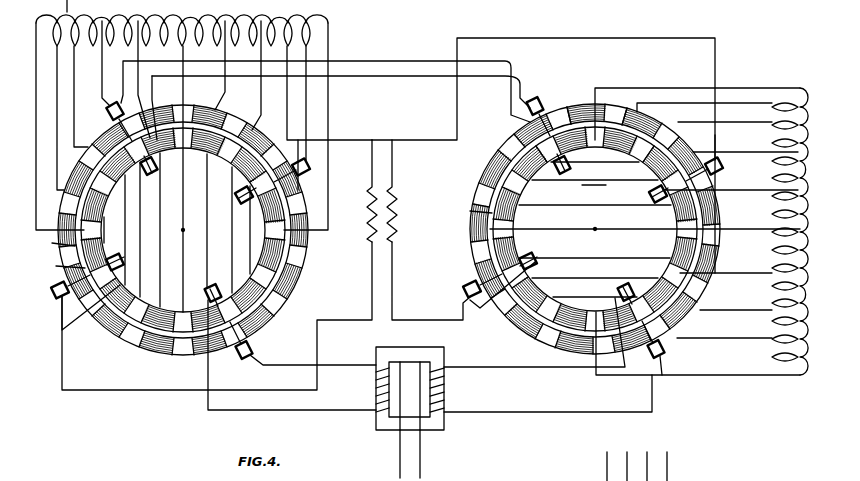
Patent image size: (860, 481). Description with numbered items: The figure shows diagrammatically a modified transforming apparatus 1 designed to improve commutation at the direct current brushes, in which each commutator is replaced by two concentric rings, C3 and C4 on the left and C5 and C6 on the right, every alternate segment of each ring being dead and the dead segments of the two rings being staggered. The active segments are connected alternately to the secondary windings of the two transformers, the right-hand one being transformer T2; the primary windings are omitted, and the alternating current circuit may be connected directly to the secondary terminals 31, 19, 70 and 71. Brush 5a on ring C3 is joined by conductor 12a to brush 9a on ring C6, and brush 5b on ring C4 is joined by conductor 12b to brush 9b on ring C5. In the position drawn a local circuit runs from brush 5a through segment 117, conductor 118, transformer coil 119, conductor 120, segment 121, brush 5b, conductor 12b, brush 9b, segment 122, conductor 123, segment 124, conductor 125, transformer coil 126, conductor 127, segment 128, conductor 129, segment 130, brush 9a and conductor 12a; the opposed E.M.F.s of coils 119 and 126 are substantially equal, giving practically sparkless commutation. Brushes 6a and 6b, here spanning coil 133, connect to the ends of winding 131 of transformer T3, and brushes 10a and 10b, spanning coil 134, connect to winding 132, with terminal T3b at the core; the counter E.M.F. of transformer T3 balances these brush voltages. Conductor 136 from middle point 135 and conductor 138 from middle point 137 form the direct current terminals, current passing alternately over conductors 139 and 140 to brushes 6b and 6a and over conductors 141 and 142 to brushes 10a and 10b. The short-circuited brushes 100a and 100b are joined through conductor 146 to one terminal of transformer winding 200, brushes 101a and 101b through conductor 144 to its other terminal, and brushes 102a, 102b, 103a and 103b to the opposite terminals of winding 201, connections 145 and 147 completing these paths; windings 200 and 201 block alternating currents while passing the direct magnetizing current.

The motor 1 is at (64, 7).
The secondary winding terminal 31 is at (52, 115).
The transformer coil 119 is at (118, 22).
The coil of the secondary winding 133 is at (240, 22).
The secondary winding terminal 19 is at (329, 22).
The conductor 12a is at (366, 62).
The conductor 12b is at (368, 78).
The conductor 118 is at (102, 75).
The conductor 120 is at (139, 73).
The commutator segment 121 is at (160, 150).
The commutator segment 117 is at (103, 133).
The brush 5a is at (107, 116).
The brush 5b is at (155, 172).
The short circuited brush 101a is at (309, 168).
The short circuited brush 101b is at (238, 201).
The short circuited brush 100a is at (56, 296).
The short circuited brush 100b is at (122, 259).
The brush 6a is at (216, 286).
The brush 6b is at (251, 349).
The commutator ring C3 is at (52, 242).
The commutator ring C4 is at (59, 265).
The commutator ring C5 is at (480, 190).
The commutator ring C6 is at (470, 209).
The conductor 144 is at (352, 140).
The conductor 145 is at (416, 140).
The transformer winding 200 is at (367, 218).
The transformer winding 201 is at (397, 216).
The conductor 146 is at (340, 320).
The conductor 147 is at (422, 320).
The conductor 139 is at (342, 365).
The conductor 140 is at (338, 410).
The conductor 141 is at (500, 367).
The conductor 142 is at (504, 412).
The transformer T3 is at (410, 380).
The transformer terminal T3b is at (410, 456).
The middle point of winding 135 is at (409, 389).
The middle point of winding 137 is at (420, 392).
The conductor 136 is at (398, 455).
The conductor 138 is at (423, 455).
The transformer winding 131 is at (374, 386).
The transformer winding 132 is at (446, 386).
The brush 9a is at (568, 171).
The brush 9b is at (542, 103).
The short circuited brush 103a is at (722, 169).
The short circuited brush 103b is at (655, 203).
The short circuited brush 102a is at (464, 289).
The short circuited brush 102b is at (534, 257).
The brush 10a is at (628, 286).
The brush 10b is at (664, 350).
The commutator segment 122 is at (564, 118).
The commutator segment 124 is at (634, 118).
The commutator segment 130 is at (546, 154).
The commutator segment 128 is at (652, 154).
The conductor 123 is at (598, 150).
The conductor 129 is at (606, 185).
The conductor 125 is at (738, 100).
The transformer coil 126 is at (727, 113).
The conductor 127 is at (740, 145).
The coil of the secondary winding 134 is at (772, 357).
The secondary winding terminal 70 is at (798, 92).
The secondary winding terminal 71 is at (798, 376).
The transformer T2 is at (789, 242).